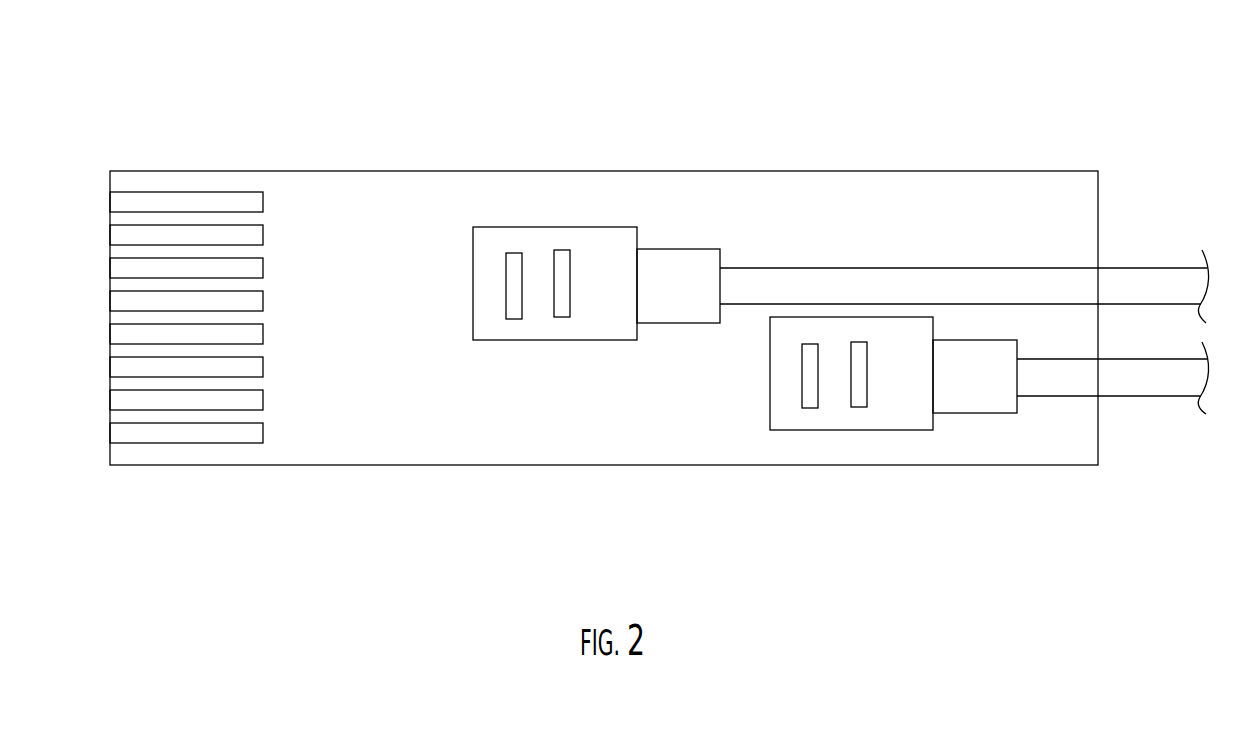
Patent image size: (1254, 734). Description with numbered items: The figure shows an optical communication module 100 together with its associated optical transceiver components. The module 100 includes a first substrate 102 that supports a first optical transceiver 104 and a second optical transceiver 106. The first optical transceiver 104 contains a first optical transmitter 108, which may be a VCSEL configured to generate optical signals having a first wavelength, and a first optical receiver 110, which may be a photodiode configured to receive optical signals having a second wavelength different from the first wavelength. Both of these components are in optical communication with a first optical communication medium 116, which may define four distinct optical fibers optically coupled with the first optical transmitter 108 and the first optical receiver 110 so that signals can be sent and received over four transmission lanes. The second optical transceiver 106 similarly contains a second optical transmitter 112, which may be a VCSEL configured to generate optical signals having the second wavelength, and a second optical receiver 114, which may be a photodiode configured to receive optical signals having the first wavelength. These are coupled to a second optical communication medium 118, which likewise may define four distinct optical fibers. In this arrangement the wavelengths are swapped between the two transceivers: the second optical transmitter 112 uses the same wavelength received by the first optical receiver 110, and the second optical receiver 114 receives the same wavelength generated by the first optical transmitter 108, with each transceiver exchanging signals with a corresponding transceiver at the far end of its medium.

The optical communication module 100 is at (661, 279).
The first substrate 102 is at (298, 198).
The first optical transceiver 104 is at (575, 218).
The second optical transceiver 106 is at (877, 426).
The first optical transmitter 108 is at (517, 253).
The first optical receiver 110 is at (562, 257).
The second optical transmitter 112 is at (868, 387).
The second optical receiver 114 is at (822, 402).
The first optical communication medium 116 is at (1150, 263).
The second optical communication medium 118 is at (1158, 403).